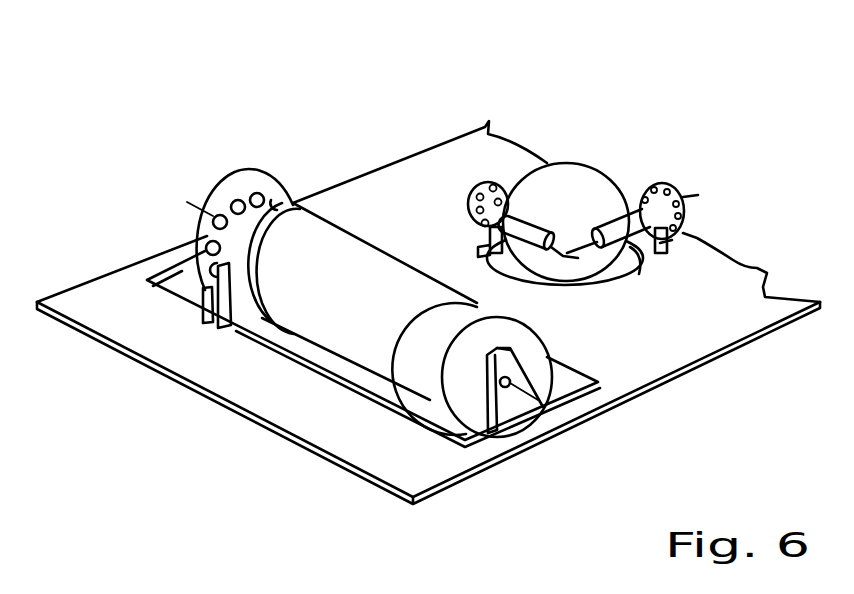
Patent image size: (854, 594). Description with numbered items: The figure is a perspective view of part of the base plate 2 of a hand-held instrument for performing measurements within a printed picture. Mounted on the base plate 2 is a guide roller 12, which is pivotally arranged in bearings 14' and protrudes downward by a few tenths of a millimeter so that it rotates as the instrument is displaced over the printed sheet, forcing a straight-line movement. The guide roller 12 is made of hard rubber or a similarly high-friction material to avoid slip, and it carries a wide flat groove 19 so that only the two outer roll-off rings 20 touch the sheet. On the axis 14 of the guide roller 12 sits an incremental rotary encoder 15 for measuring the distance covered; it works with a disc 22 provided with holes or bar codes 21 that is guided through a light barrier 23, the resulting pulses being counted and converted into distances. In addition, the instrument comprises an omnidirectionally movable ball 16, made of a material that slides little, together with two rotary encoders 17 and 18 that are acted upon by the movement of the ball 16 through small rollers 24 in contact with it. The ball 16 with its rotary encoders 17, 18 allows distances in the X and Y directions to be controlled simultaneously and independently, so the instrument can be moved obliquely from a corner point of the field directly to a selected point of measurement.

The base plate 2 is at (385, 187).
The guide roller 12 is at (470, 397).
The axis 14 is at (542, 446).
The bearings 14' is at (531, 493).
The incremental rotary encoder 15 is at (216, 193).
The omnidirectionally movable ball 16 is at (577, 195).
The rotary encoder 17 is at (672, 195).
The rotary encoder 18 is at (488, 190).
The wide flat groove 19 is at (378, 247).
The roll-off rings 20 is at (443, 348).
The holes or bar codes 21 is at (215, 248).
The disc 22 is at (210, 230).
The light barrier 23 is at (683, 233).
The small rollers 24 is at (522, 230).